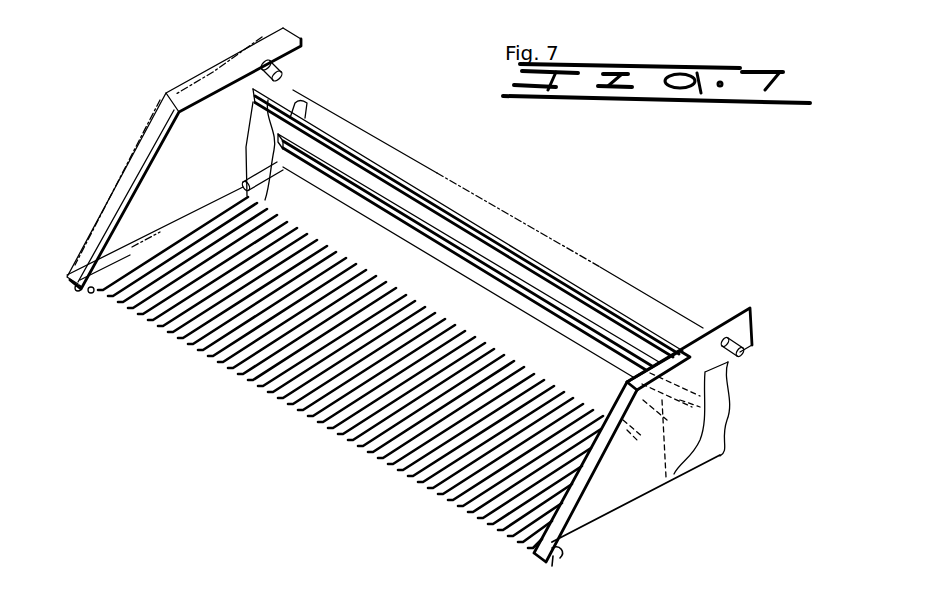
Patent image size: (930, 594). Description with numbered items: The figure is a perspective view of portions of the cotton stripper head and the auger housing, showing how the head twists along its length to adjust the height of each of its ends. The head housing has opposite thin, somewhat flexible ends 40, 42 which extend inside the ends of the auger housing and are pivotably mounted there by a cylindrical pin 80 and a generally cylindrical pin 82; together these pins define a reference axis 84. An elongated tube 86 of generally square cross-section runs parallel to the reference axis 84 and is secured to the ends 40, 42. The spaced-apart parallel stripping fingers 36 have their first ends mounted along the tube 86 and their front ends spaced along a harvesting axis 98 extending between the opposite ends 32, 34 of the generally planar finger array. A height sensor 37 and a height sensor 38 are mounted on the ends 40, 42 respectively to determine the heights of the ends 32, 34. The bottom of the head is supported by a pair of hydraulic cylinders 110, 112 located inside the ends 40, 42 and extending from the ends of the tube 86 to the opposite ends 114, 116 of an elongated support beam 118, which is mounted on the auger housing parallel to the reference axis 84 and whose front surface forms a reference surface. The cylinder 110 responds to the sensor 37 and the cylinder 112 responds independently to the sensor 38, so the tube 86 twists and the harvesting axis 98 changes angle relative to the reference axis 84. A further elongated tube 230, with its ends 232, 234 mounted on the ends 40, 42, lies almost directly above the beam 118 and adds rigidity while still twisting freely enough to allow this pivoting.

The end of the array of stripping fingers 32 is at (97, 297).
The end of the array of stripping fingers 34 is at (390, 467).
The stripping fingers 36 is at (205, 338).
The height sensor 37 is at (82, 300).
The height sensor 38 is at (547, 567).
The end of the head housing 40 is at (165, 157).
The end of the head housing 42 is at (603, 508).
The cylindrical pin 80 is at (287, 71).
The cylindrical pin 82 is at (746, 352).
The reference axis 84 is at (393, 143).
The elongated tube 86 is at (485, 348).
The harvesting axis 98 is at (430, 490).
The hydraulic cylinder 110 is at (268, 182).
The hydraulic cylinder 112 is at (664, 472).
The end of the support beam 114 is at (343, 200).
The end of the support beam 116 is at (627, 360).
The support beam 118 is at (457, 259).
The elongated tube 230 is at (503, 222).
The end of the tube 232 is at (323, 133).
The end of the tube 234 is at (657, 330).